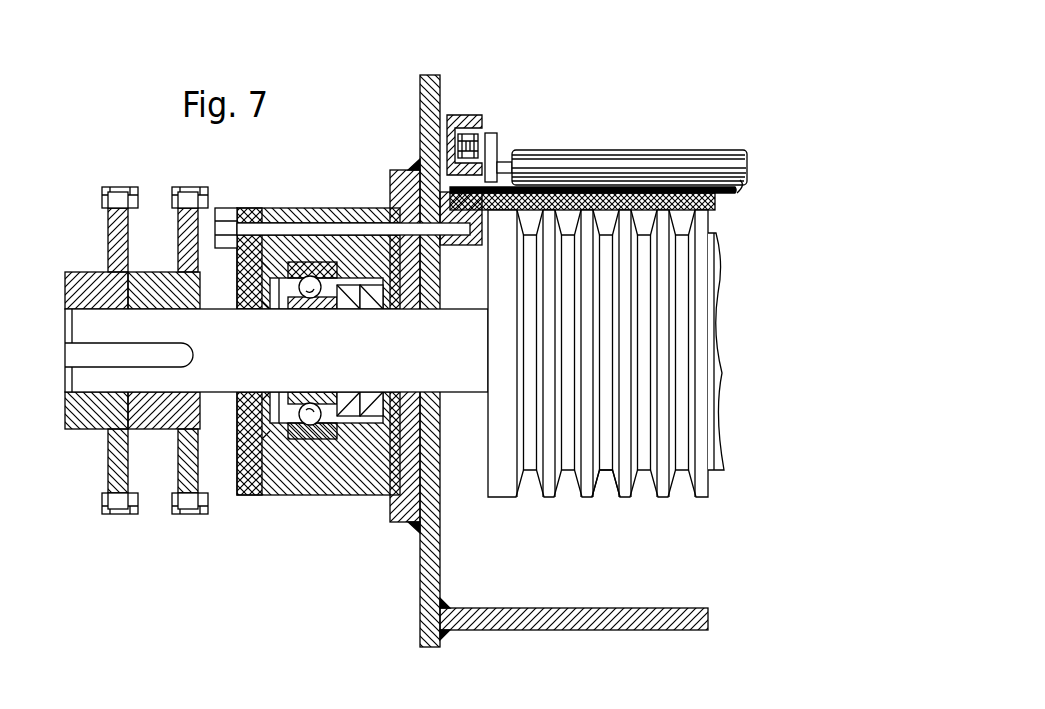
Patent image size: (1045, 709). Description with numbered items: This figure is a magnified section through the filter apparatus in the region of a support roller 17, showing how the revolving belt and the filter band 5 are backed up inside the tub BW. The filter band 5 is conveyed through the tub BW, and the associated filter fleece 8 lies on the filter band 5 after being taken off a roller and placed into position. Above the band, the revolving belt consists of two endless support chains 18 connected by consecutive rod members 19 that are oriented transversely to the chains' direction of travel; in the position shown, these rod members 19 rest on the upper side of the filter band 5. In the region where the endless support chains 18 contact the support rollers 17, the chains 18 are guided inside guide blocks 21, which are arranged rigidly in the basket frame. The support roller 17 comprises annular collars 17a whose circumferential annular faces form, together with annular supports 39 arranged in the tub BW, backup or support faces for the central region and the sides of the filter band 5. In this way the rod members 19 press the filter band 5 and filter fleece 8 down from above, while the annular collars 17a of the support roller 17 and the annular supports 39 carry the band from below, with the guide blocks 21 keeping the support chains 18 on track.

The filter band 5 is at (712, 201).
The filter fleece 8 is at (737, 192).
The support rollers 17 is at (635, 381).
The annular collars 17a is at (628, 497).
The endless support chains 18 is at (452, 140).
The rod members 19 is at (643, 165).
The guide blocks 21 is at (482, 120).
The annular supports 39 is at (455, 249).
The tub BW is at (432, 552).